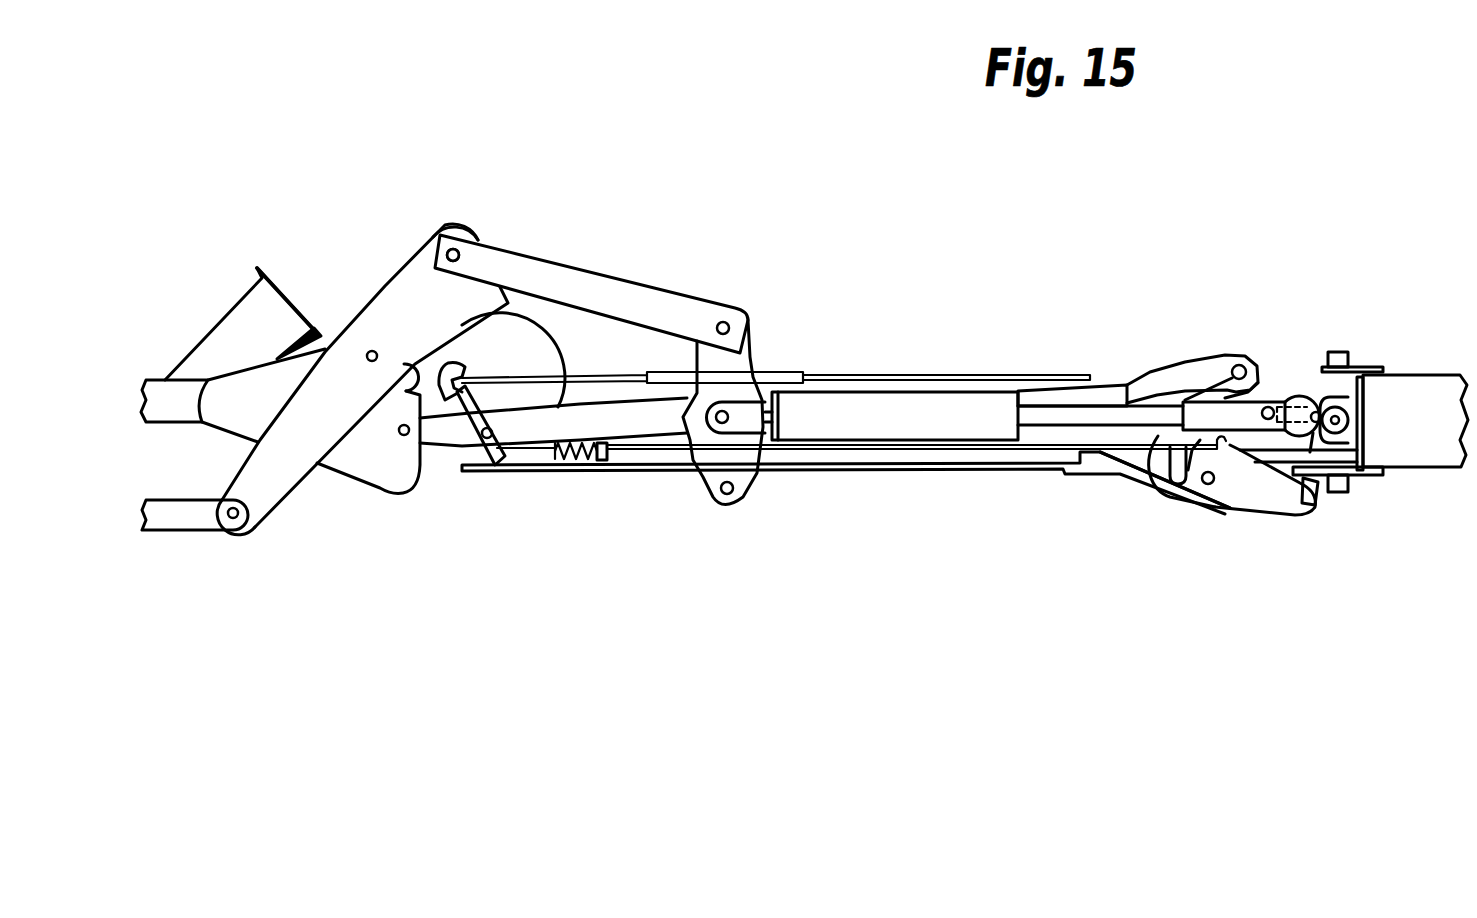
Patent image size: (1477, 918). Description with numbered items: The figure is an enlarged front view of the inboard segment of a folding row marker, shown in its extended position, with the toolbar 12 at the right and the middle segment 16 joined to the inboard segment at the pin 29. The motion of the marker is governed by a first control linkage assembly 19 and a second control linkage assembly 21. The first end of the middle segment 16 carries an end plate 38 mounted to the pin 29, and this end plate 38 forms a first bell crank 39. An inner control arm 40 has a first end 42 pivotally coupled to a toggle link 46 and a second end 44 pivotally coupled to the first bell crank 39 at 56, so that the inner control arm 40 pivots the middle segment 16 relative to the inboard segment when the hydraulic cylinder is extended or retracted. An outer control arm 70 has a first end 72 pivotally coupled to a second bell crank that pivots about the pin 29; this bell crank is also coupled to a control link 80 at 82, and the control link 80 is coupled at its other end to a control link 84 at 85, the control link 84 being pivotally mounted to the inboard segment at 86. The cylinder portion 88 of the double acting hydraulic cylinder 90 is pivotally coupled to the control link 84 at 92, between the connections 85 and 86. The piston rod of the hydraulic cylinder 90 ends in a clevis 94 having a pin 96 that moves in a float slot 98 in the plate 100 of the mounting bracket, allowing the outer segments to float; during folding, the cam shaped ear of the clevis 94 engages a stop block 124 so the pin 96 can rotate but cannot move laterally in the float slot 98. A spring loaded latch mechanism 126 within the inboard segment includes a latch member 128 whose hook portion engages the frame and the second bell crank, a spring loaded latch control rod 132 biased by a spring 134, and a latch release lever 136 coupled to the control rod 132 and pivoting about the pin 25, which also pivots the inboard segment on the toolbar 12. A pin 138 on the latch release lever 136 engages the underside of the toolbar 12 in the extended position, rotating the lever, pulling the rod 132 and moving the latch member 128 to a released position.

The toolbar 12 is at (1418, 372).
The middle segment 16 is at (153, 380).
The first control linkage assembly 19 is at (1087, 354).
The second control linkage assembly 21 is at (513, 244).
The pin 25 is at (1203, 487).
The pin 29 is at (369, 352).
The end plate 38 is at (334, 483).
The first bell crank 39 is at (408, 366).
The inner control arm 40 is at (565, 372).
The first end 42 is at (1236, 364).
The second end 44 is at (433, 463).
The toggle link 46 is at (1273, 368).
The pivot connection 56 is at (399, 440).
The outer control arm 70 is at (185, 532).
The first end 72 is at (248, 522).
The control link 80 is at (555, 264).
The coupling 82 is at (455, 248).
The control link 84 is at (757, 357).
The coupling 85 is at (720, 321).
The pivot mount 86 is at (736, 495).
The cylinder portion 88 is at (880, 391).
The double acting hydraulic cylinder 90 is at (957, 386).
The pivot coupling 92 is at (720, 427).
The clevis 94 is at (1170, 430).
The pin 96 is at (1272, 404).
The float slot 98 is at (1297, 402).
The plate 100 is at (1313, 380).
The stop block 124 is at (1360, 467).
The spring loaded latch mechanism 126 is at (497, 488).
The latch member 128 is at (507, 377).
The latch control rod 132 is at (815, 455).
The spring 134 is at (583, 462).
The latch release lever 136 is at (1263, 505).
The pin 138 is at (1317, 490).